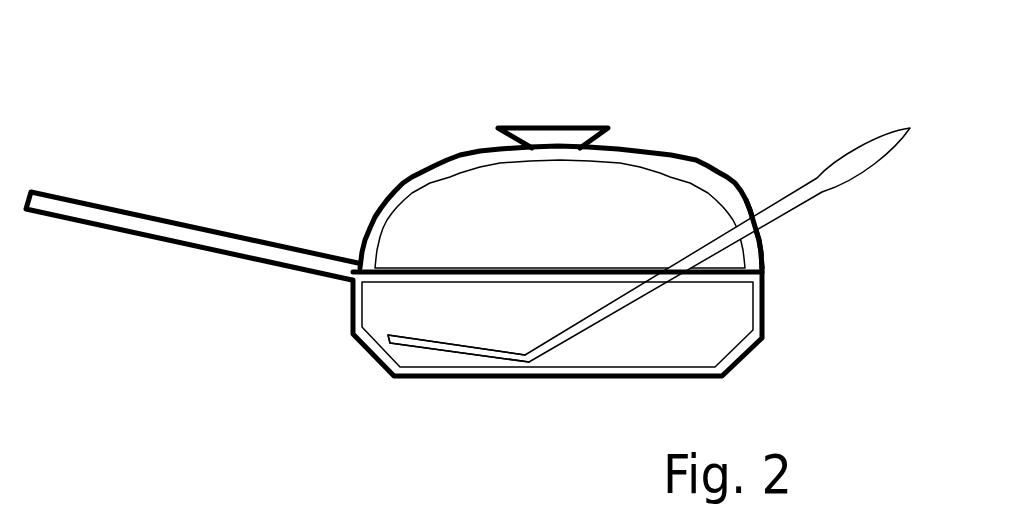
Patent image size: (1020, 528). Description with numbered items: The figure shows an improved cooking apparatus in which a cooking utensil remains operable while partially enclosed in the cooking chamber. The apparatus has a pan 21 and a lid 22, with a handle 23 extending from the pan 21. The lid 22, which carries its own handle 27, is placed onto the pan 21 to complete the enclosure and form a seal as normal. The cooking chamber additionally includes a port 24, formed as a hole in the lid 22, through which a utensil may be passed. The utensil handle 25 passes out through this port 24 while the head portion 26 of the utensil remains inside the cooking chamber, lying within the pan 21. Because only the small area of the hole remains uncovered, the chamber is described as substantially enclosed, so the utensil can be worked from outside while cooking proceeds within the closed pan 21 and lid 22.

The pan 21 is at (350, 311).
The lid 22 is at (422, 180).
The handle 23 is at (178, 232).
The port 24 is at (750, 240).
The utensil handle 25 is at (857, 165).
The head portion 26 is at (418, 347).
The lid handle 27 is at (532, 143).